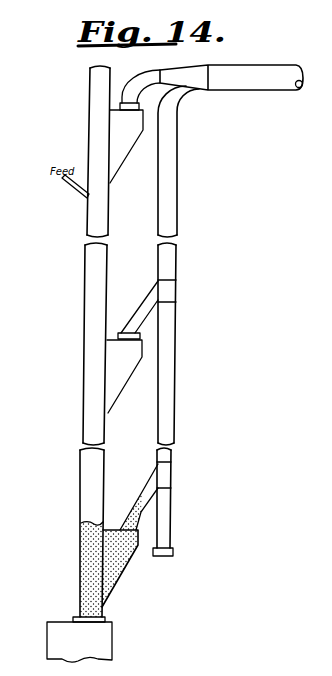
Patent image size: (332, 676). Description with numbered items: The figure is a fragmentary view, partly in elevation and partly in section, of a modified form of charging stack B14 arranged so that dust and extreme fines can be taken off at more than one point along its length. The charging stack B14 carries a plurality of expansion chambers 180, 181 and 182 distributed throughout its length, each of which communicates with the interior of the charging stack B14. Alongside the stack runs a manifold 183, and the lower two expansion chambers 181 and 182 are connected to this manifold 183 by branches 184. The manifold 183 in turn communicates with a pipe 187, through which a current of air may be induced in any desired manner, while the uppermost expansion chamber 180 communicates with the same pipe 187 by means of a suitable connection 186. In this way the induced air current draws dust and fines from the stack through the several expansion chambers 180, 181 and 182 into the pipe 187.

The charging stack B14 is at (87, 322).
The expansion chamber 180 is at (122, 146).
The expansion chamber 181 is at (117, 377).
The expansion chamber 182 is at (123, 567).
The manifold 183 is at (170, 375).
The branches 184 is at (146, 302).
The connection 186 is at (140, 82).
The pipe 187 is at (257, 87).